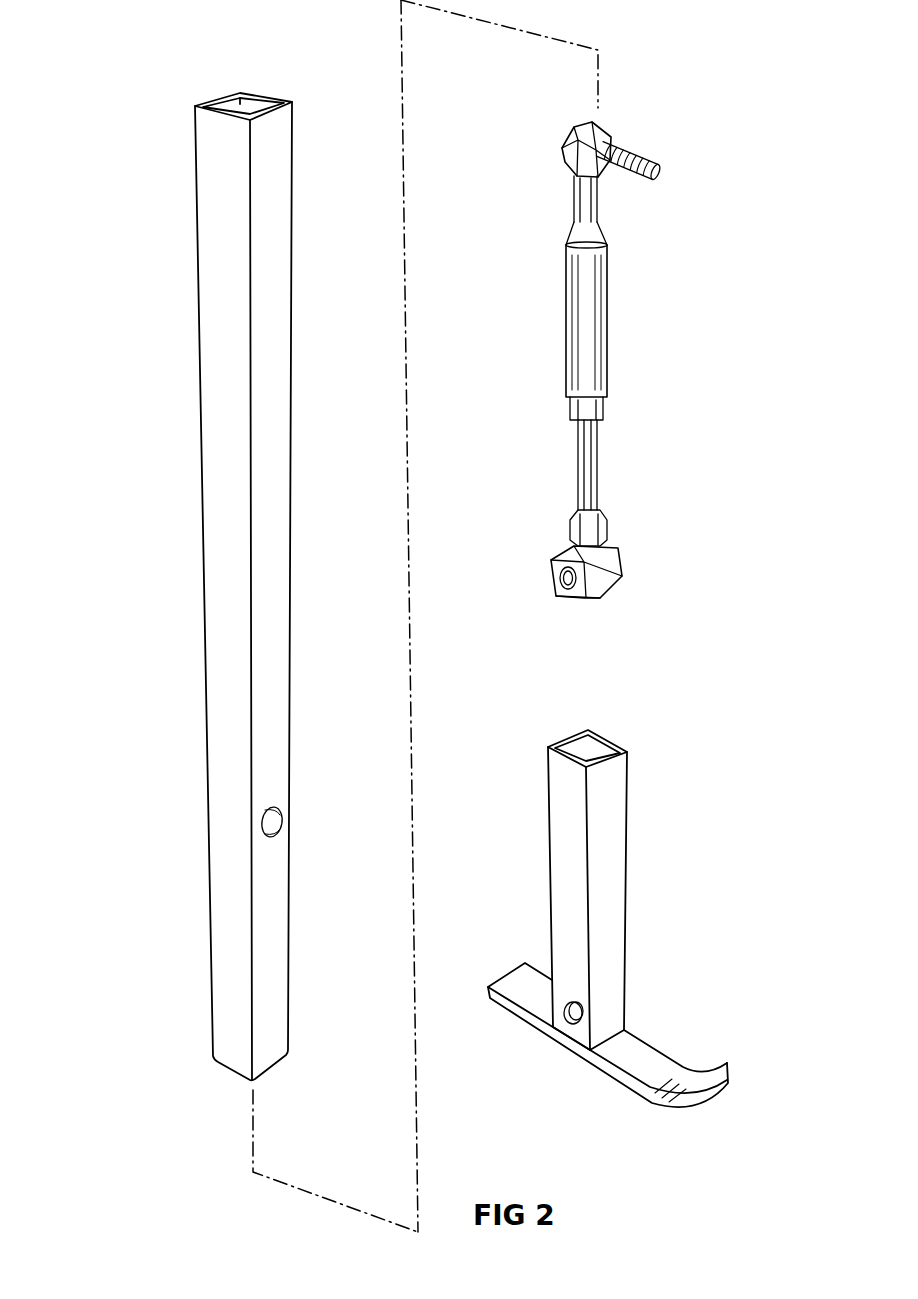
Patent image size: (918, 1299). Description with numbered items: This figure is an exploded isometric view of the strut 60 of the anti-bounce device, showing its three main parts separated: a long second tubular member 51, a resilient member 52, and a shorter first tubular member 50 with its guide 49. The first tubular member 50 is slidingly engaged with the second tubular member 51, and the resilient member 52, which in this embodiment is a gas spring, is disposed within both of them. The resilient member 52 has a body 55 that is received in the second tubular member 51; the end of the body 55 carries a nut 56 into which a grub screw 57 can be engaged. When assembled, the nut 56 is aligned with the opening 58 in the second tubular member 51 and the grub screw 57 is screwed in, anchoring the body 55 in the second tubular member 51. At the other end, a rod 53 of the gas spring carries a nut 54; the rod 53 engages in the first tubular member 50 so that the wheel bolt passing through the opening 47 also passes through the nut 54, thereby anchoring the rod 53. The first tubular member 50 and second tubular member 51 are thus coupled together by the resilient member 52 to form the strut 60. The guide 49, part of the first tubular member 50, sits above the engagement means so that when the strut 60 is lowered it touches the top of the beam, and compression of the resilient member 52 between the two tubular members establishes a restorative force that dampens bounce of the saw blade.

The strut 60 is at (122, 108).
The second tubular member 51 is at (180, 605).
The opening 58 is at (275, 818).
The resilient member 52 is at (635, 330).
The nut 56 is at (596, 130).
The grub screw 57 is at (640, 160).
The body 55 is at (580, 326).
The rod 53 is at (598, 475).
The nut 54 is at (612, 565).
The first tubular member 50 is at (660, 913).
The guide 49 is at (638, 1082).
The opening 47 is at (566, 1010).